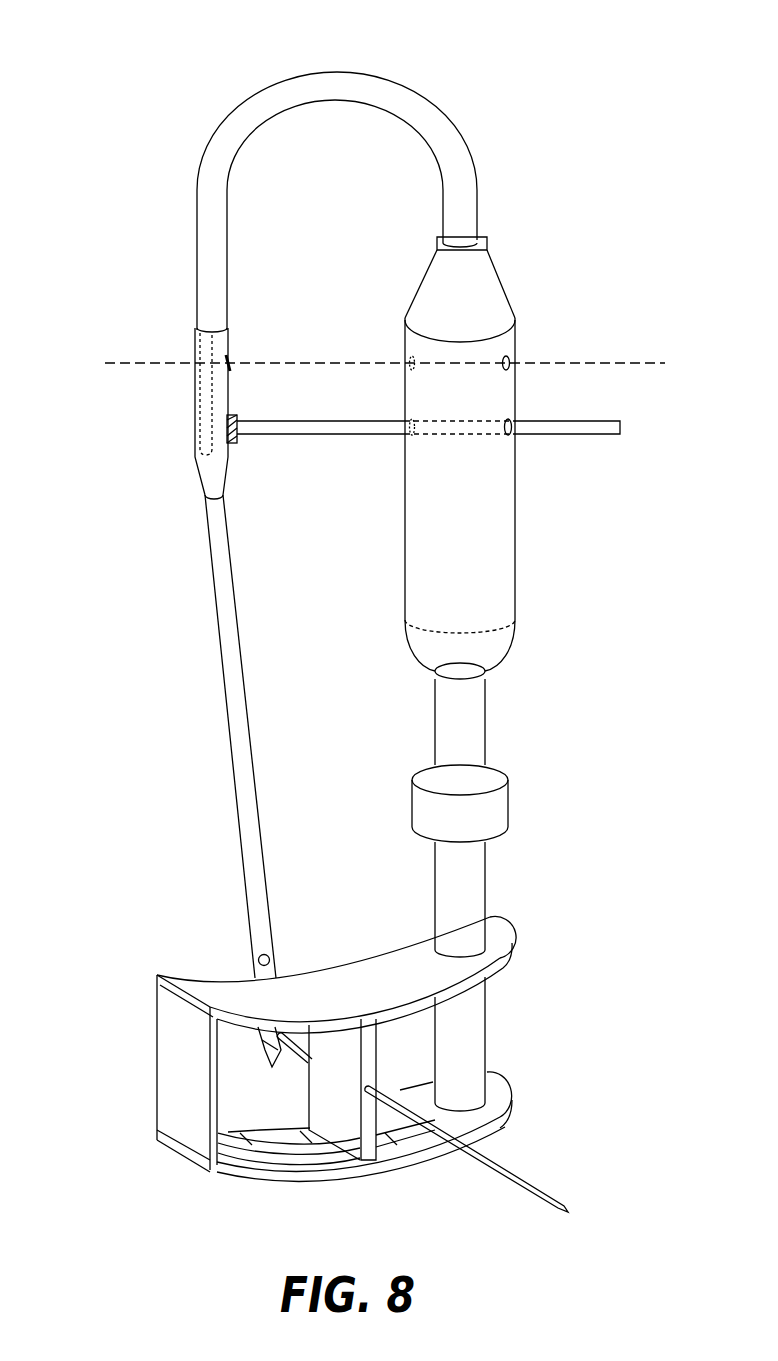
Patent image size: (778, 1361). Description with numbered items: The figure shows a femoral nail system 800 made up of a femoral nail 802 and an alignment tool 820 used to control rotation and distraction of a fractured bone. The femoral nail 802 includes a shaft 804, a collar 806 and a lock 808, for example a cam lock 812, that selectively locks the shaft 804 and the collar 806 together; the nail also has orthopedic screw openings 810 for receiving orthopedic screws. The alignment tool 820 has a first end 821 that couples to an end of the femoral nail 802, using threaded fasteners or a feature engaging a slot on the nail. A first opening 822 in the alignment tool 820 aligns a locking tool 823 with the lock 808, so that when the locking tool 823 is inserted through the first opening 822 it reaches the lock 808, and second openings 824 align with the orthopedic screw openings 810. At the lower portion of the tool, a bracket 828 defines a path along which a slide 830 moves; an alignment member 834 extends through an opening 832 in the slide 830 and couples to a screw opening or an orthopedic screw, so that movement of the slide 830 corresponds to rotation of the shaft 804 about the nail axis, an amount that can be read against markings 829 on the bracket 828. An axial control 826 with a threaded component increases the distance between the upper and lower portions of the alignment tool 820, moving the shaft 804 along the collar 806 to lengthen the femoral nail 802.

The femoral nail system 800 is at (158, 60).
The femoral nail 802 is at (148, 540).
The shaft 804 is at (214, 617).
The collar 806 is at (200, 457).
The lock 808 is at (237, 442).
The orthopedic screw openings 810 is at (229, 363).
The cam lock 812 is at (258, 962).
The alignment tool 820 is at (573, 532).
The first end 821 is at (196, 276).
The first opening 822 is at (510, 436).
The locking tool 823 is at (622, 426).
The second openings 824 is at (508, 362).
The axial control 826 is at (510, 797).
The bracket 828 is at (490, 1070).
The markings 829 is at (262, 1135).
The slide 830 is at (380, 1135).
The opening 832 is at (360, 1101).
The alignment member 834 is at (545, 1178).